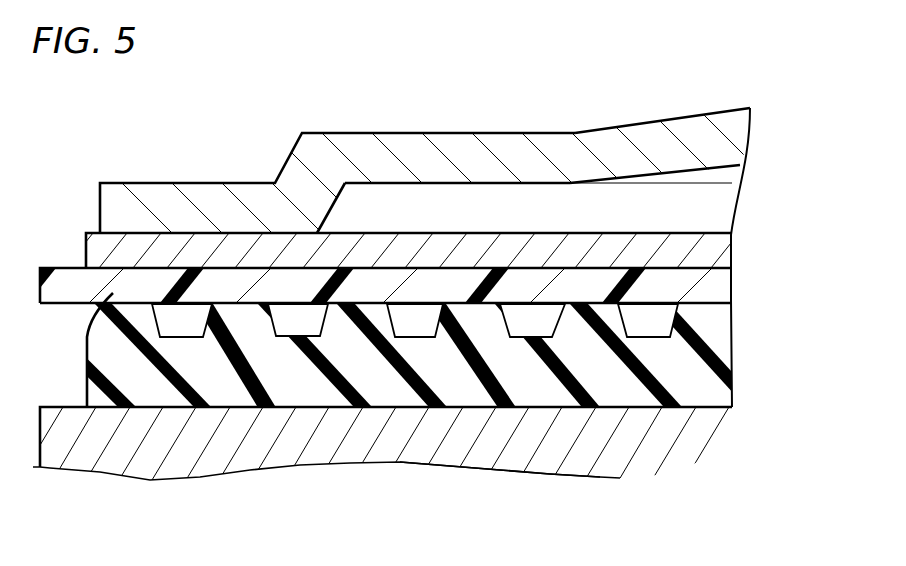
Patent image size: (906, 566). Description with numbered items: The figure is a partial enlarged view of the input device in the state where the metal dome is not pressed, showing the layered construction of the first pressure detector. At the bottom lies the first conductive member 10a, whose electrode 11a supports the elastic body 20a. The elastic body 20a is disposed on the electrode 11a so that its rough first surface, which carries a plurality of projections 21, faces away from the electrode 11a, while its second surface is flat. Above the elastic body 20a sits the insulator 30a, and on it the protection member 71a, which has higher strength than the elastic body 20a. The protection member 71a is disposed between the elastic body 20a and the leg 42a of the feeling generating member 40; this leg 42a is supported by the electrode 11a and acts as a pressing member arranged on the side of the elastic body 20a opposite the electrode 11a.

The first conductive member 10a is at (90, 463).
The electrode 11a is at (520, 465).
The elastic body 20a is at (121, 302).
The projections 21 is at (518, 322).
The insulator 30a is at (714, 285).
The protection member 71a is at (708, 252).
The leg 42a is at (197, 188).
The feeling generating member 40 is at (696, 128).